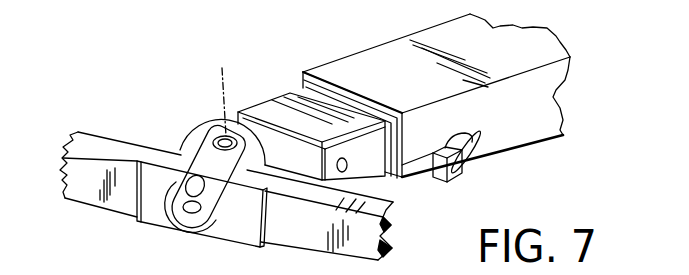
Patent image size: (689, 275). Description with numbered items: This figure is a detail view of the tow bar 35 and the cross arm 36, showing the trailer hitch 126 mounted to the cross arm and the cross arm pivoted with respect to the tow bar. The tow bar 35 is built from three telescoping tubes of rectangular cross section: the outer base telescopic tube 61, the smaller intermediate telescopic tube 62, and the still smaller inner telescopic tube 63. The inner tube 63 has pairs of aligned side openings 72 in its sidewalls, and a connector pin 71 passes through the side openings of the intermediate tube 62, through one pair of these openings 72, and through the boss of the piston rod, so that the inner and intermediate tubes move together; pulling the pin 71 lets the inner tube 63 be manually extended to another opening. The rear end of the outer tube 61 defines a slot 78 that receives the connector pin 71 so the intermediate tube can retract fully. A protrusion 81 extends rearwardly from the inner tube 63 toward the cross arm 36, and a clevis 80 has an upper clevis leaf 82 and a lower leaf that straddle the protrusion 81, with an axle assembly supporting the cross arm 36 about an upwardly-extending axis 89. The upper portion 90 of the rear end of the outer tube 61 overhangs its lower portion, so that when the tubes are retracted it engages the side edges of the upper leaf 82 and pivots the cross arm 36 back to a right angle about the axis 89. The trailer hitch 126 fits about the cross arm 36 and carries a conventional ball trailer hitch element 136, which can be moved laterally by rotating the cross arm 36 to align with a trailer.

The tow bar 35 is at (367, 46).
The cross arm 36 is at (128, 134).
The outer base telescopic tube 61 is at (437, 38).
The intermediate telescopic tube 62 is at (316, 77).
The inner telescopic tube 63 is at (293, 96).
The connector pin 71 is at (479, 141).
The aligned openings of inner telescopic tube 72 is at (347, 165).
The slot 78 is at (456, 172).
The clevis 80 is at (230, 135).
The protrusion 81 is at (266, 164).
The upper clevis leaf 82 is at (199, 138).
The upwardly-extending axis 89 is at (222, 77).
The upper portion of rear end portion of outer telescopic tube 90 is at (427, 123).
The trailer hitch 126 is at (133, 158).
The ball trailer hitch element 136 is at (160, 227).